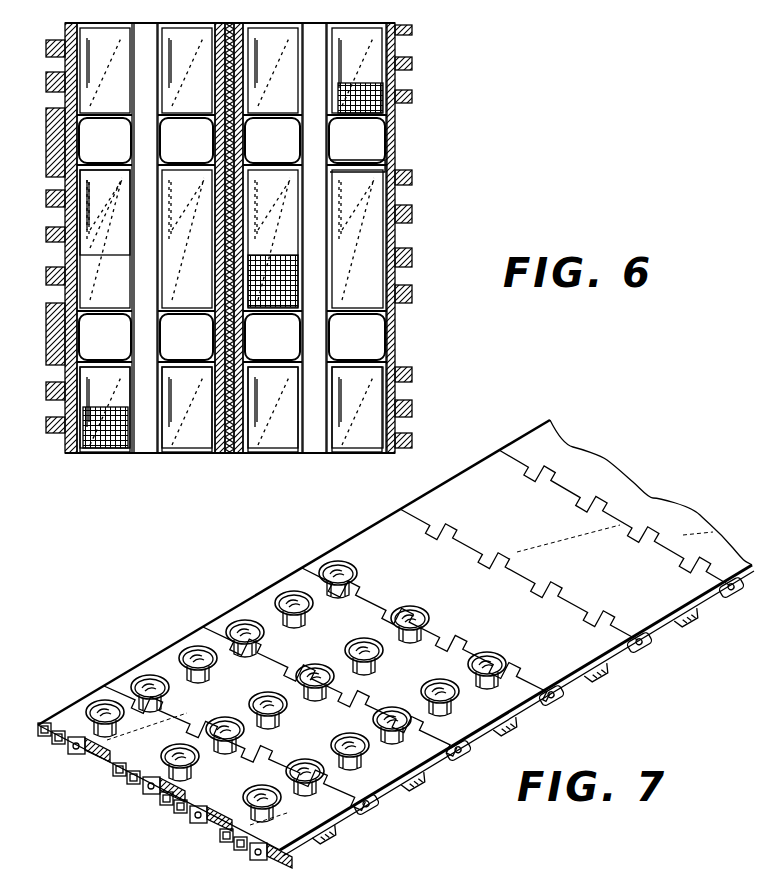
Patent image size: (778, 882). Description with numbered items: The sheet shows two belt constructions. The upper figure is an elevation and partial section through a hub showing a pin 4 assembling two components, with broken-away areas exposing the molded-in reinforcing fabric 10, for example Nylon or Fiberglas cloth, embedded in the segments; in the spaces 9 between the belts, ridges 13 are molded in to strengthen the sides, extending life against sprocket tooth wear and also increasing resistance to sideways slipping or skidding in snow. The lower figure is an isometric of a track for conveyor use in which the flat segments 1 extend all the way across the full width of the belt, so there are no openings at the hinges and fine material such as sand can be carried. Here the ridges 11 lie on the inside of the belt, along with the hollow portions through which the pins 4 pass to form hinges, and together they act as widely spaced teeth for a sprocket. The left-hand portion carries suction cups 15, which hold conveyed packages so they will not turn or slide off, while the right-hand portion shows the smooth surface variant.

In FIG. 6, the flat segment 1 is at (113, 253).
In FIG. 7, the flat segment 1 is at (504, 619).
In FIG. 6, the pin 4 is at (222, 331).
In FIG. 7, the pin 4 is at (551, 698).
In FIG. 6, the space between the belts 9 is at (277, 346).
In FIG. 6, the reinforcing fabric 10 is at (106, 452).
In FIG. 6, the ridge 11 is at (148, 445).
In FIG. 7, the ridge 11 is at (597, 672).
In FIG. 6, the ridge 13 is at (349, 162).
In FIG. 7, the suction cup 15 is at (208, 648).